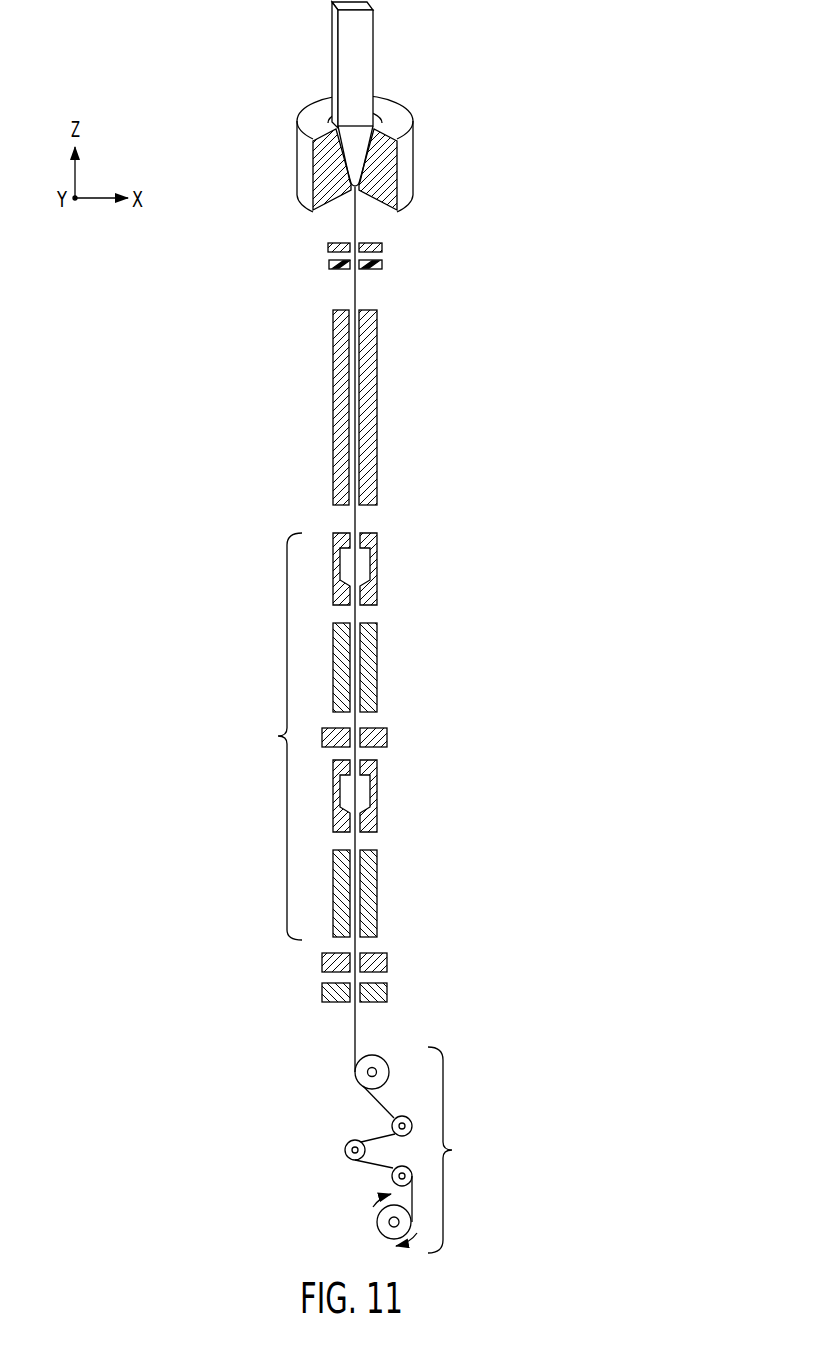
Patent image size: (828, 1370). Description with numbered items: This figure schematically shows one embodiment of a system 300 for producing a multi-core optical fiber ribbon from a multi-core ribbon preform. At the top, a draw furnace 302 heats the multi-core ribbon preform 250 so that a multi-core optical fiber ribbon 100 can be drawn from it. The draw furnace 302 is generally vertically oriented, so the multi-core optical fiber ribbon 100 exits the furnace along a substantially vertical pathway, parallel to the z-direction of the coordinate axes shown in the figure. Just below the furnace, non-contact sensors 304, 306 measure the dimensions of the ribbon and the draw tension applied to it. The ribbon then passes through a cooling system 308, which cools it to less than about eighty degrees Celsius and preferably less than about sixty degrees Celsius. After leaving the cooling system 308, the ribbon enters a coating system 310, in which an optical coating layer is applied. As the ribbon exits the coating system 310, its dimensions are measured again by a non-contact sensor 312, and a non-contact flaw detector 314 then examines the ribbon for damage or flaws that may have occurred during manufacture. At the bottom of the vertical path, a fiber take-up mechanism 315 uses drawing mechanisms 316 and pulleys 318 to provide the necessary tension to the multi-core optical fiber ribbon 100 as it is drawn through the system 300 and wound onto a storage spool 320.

The multi-core ribbon preform 250 is at (410, 93).
The draw furnace 302 is at (414, 148).
The system 300 is at (609, 125).
The multi-core optical fiber ribbon 100 is at (313, 629).
The non-contact sensor 304 is at (382, 248).
The non-contact sensor 306 is at (382, 264).
The cooling system 308 is at (418, 407).
The coating system 310 is at (278, 736).
The non-contact sensor 312 is at (387, 962).
The non-contact flaw detector 314 is at (387, 994).
The fiber take-up mechanism 315 is at (434, 1150).
The drawing mechanism 316 is at (355, 1073).
The pulleys 318 is at (392, 1126).
The storage spool 320 is at (377, 1227).